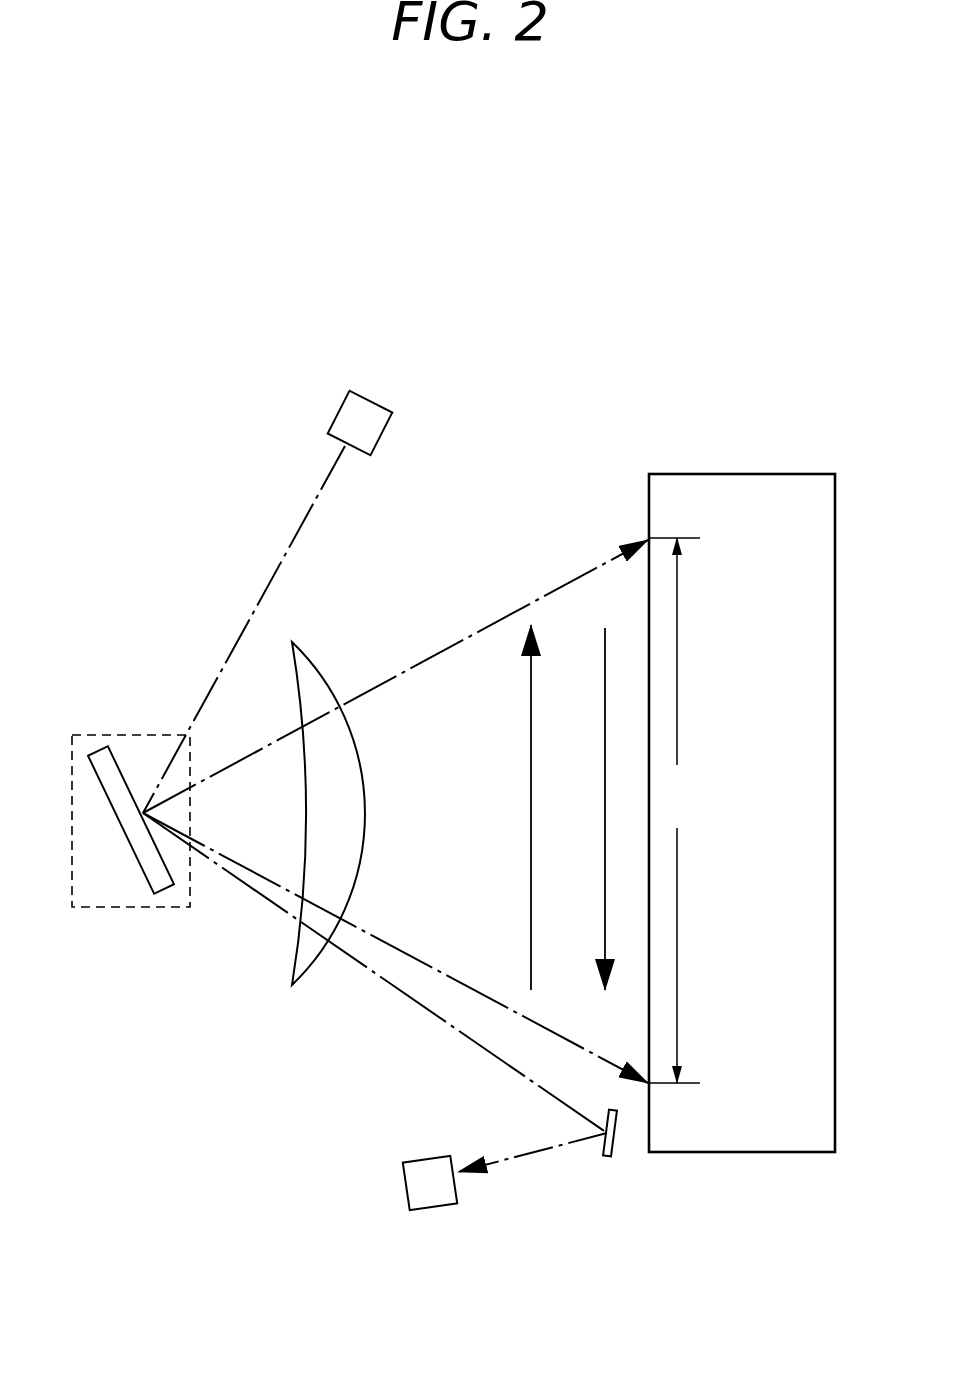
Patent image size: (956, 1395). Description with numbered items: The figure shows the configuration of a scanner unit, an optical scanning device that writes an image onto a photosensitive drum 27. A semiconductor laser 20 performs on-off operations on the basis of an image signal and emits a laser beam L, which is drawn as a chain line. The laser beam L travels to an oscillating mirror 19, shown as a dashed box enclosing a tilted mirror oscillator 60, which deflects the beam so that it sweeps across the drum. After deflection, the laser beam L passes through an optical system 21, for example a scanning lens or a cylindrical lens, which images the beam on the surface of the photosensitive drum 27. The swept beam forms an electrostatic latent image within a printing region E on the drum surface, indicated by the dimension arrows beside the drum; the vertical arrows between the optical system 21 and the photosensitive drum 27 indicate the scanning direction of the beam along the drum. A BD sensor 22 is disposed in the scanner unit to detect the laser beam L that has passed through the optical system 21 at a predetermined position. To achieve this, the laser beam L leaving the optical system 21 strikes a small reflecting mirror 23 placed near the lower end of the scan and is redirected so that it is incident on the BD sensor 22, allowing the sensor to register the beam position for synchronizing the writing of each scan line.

The oscillating mirror 19 is at (138, 732).
The semiconductor laser 20 is at (347, 418).
The optical system 21 is at (322, 673).
The BD sensor 22 is at (435, 1192).
The reflecting mirror 23 is at (613, 1150).
The photosensitive drum 27 is at (752, 493).
The mirror oscillator 60 is at (146, 867).
The laser beam L is at (293, 537).
The printing region E is at (674, 810).